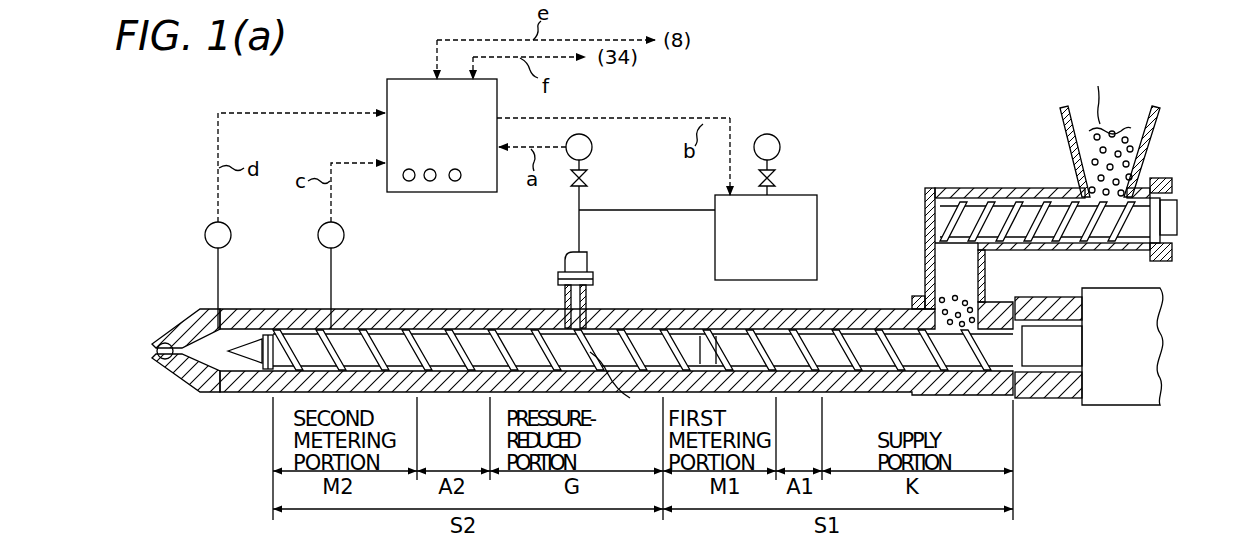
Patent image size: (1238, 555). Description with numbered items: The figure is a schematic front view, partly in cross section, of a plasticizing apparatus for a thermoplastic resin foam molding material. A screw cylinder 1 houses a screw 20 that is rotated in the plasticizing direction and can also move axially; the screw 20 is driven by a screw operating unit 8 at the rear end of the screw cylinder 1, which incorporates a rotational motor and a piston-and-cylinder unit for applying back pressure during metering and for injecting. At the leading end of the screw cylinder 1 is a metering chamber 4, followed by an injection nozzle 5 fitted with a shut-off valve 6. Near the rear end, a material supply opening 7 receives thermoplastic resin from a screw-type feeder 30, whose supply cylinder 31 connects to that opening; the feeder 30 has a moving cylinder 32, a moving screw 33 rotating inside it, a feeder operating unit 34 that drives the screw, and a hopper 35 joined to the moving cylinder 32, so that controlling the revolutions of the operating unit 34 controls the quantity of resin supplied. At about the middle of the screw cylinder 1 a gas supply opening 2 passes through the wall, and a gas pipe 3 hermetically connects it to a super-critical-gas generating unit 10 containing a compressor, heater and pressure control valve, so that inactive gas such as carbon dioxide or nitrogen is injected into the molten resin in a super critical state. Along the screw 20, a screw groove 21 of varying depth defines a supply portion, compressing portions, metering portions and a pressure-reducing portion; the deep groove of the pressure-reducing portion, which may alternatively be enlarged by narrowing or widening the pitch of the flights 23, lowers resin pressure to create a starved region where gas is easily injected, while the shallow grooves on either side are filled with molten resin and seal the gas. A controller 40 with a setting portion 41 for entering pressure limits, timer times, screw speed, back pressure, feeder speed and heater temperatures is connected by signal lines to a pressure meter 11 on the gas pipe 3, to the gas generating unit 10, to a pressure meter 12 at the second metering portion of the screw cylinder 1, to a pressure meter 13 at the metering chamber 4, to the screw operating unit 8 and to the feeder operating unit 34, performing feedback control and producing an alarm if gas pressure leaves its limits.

The screw cylinder 1 is at (424, 316).
The gas supply opening 2 is at (591, 298).
The gas pipe 3 is at (649, 210).
The metering chamber 4 is at (620, 335).
The injection nozzle 5 is at (193, 318).
The shut-off valve 6 is at (161, 342).
The material supply opening 7 is at (975, 318).
The screw operating unit 8 is at (1128, 405).
The super-critical-gas generating unit 10 is at (818, 222).
The pressure meter 11 is at (593, 147).
The pressure meter 12 is at (345, 235).
The pressure meter 13 is at (232, 235).
The screw 20 is at (708, 340).
The screw groove 21 is at (386, 326).
The flight 23 is at (610, 345).
The screw-type feeder 30 is at (1035, 185).
The supply cylinder 31 is at (925, 245).
The moving cylinder 32 is at (968, 188).
The moving screw 33 is at (1045, 200).
The feeder operating unit 34 is at (1160, 178).
The hopper 35 is at (1146, 116).
The controller 40 is at (407, 77).
The setting portion 41 is at (457, 181).